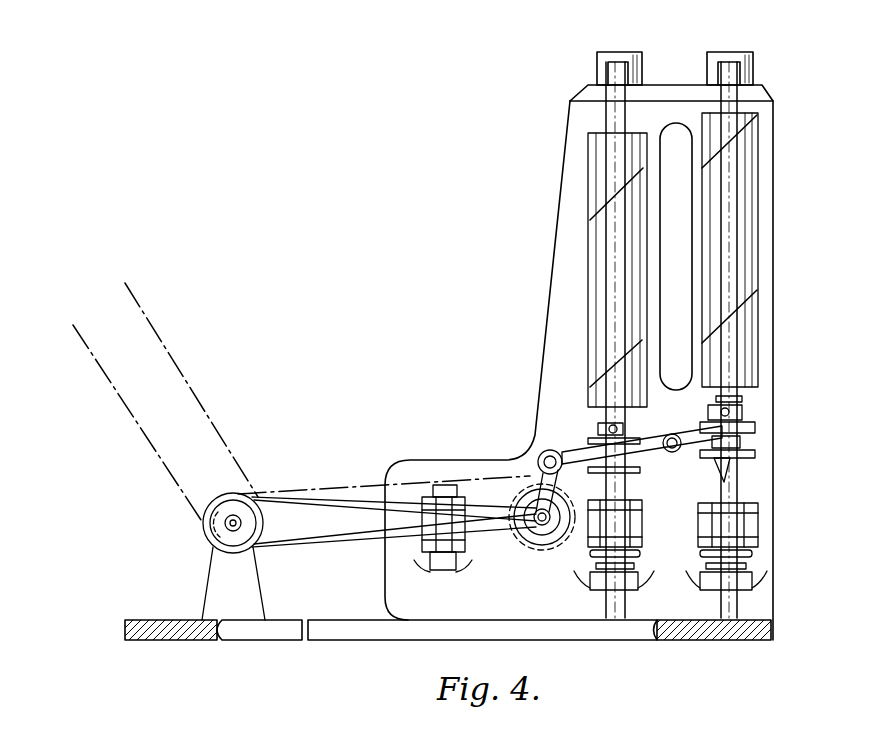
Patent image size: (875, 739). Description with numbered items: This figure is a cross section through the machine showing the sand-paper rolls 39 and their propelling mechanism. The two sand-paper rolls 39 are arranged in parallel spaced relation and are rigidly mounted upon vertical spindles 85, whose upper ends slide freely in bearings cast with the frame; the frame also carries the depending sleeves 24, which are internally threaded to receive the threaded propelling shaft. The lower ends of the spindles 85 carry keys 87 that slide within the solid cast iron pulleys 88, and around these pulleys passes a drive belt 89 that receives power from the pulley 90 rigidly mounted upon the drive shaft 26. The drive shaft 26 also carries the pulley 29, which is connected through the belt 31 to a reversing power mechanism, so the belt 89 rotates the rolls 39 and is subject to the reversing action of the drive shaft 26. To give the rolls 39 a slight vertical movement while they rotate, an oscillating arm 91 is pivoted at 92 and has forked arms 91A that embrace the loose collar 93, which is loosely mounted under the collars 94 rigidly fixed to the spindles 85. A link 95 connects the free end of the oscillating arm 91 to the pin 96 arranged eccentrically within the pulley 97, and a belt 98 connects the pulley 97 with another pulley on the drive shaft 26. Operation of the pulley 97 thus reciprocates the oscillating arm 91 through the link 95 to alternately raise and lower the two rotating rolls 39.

The depending sleeves 24 is at (743, 412).
The drive shaft 26 is at (242, 523).
The pulley 29 is at (205, 513).
The belt 31 is at (157, 453).
The sand-paper rolls 39 is at (590, 283).
The vertical spindles 85 is at (610, 413).
The keys 87 is at (740, 468).
The solid cast iron pulleys 88 is at (642, 545).
The drive belt 89 is at (318, 547).
The pulley 90 is at (212, 536).
The oscillating arm 91 is at (596, 466).
The forked arms 91A is at (756, 432).
The pivot 92 is at (672, 434).
The loose collar 93 is at (595, 432).
The collars 94 is at (600, 426).
The link 95 is at (533, 480).
The pin 96 is at (538, 524).
The pulley 97 is at (543, 547).
The belt 98 is at (333, 490).